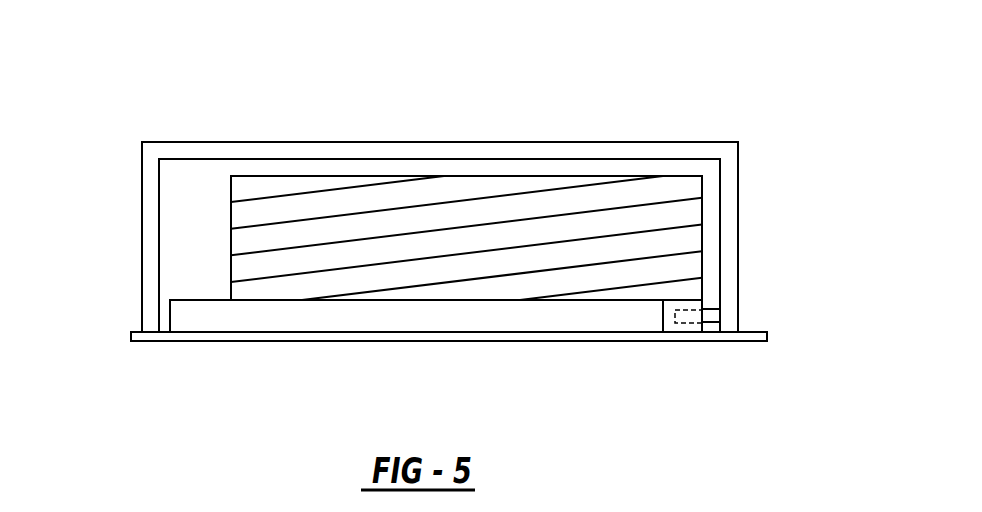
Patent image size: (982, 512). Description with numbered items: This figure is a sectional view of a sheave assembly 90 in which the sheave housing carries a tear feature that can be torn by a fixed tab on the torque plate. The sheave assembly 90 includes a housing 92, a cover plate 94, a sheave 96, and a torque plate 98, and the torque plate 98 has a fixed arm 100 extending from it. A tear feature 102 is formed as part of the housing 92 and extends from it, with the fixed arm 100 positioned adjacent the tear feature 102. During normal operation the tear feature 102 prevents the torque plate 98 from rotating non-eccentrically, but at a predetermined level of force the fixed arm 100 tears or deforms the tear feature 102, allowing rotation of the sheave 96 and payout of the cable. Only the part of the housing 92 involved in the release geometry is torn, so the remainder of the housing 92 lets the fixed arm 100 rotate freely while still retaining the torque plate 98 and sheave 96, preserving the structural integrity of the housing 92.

The sheave assembly 90 is at (256, 123).
The housing 92 is at (152, 267).
The cover plate 94 is at (214, 342).
The sheave 96 is at (570, 213).
The torque plate 98 is at (318, 317).
The fixed arm 100 is at (670, 322).
The tear feature 102 is at (717, 316).